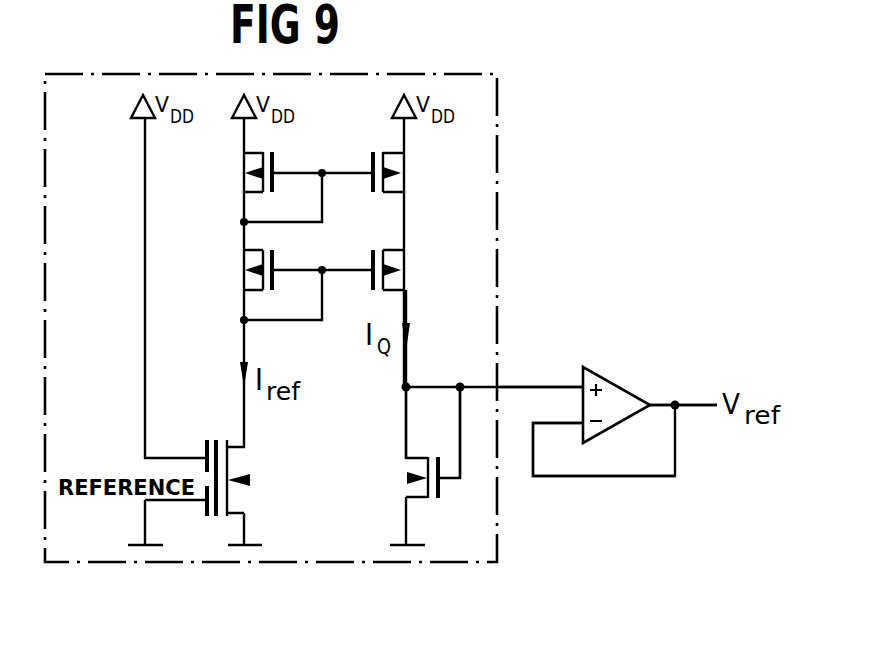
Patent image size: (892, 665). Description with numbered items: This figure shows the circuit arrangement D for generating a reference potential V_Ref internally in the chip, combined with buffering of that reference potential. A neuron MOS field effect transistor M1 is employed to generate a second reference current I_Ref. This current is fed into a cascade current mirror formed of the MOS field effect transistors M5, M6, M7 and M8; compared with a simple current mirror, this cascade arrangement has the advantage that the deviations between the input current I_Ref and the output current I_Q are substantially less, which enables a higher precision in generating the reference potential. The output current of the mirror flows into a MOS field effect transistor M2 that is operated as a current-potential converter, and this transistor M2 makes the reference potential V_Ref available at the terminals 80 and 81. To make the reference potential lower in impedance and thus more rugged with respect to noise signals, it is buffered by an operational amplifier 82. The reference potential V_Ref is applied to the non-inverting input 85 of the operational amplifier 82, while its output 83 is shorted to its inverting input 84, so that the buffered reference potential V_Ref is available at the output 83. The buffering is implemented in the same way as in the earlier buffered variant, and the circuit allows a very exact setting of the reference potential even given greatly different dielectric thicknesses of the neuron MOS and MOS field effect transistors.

The circuit arrangement D is at (497, 137).
The neuron MOS field effect transistor M1 is at (250, 500).
The MOS field effect transistor M2 is at (406, 491).
The MOS field effect transistor M5 is at (245, 263).
The MOS field effect transistor M6 is at (245, 166).
The MOS field effect transistor M7 is at (403, 265).
The MOS field effect transistor M8 is at (403, 167).
The terminal 80 is at (460, 387).
The terminal 81 is at (406, 387).
The operational amplifier 82 is at (617, 378).
The output 83 is at (683, 381).
The inverting input 84 is at (604, 449).
The non-inverting input 85 is at (541, 366).